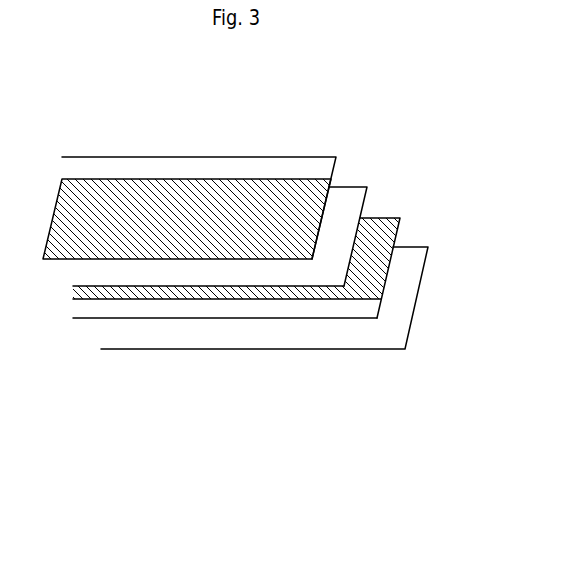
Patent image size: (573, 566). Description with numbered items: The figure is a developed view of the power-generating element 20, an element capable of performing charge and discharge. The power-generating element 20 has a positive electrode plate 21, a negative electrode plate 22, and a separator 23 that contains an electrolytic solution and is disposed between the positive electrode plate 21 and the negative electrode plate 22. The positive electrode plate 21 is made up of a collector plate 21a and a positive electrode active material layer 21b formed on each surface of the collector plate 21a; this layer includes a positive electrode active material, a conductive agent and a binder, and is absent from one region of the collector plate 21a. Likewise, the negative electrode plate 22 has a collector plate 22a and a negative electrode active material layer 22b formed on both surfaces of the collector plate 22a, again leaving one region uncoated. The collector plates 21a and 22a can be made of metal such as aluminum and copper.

The power-generating element 20 is at (104, 394).
The positive electrode plate 21 is at (191, 152).
The collector plate 21a is at (138, 167).
The positive electrode active material layer 21b is at (97, 208).
The negative electrode plate 22 is at (387, 212).
The collector plate 22a is at (243, 308).
The negative electrode active material layer 22b is at (353, 282).
The separator 23 is at (350, 193).